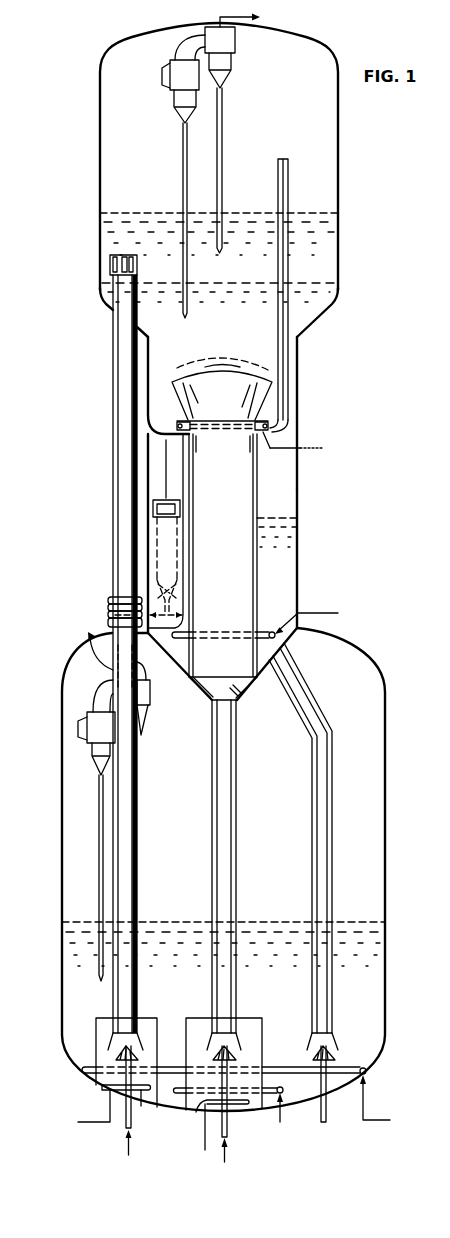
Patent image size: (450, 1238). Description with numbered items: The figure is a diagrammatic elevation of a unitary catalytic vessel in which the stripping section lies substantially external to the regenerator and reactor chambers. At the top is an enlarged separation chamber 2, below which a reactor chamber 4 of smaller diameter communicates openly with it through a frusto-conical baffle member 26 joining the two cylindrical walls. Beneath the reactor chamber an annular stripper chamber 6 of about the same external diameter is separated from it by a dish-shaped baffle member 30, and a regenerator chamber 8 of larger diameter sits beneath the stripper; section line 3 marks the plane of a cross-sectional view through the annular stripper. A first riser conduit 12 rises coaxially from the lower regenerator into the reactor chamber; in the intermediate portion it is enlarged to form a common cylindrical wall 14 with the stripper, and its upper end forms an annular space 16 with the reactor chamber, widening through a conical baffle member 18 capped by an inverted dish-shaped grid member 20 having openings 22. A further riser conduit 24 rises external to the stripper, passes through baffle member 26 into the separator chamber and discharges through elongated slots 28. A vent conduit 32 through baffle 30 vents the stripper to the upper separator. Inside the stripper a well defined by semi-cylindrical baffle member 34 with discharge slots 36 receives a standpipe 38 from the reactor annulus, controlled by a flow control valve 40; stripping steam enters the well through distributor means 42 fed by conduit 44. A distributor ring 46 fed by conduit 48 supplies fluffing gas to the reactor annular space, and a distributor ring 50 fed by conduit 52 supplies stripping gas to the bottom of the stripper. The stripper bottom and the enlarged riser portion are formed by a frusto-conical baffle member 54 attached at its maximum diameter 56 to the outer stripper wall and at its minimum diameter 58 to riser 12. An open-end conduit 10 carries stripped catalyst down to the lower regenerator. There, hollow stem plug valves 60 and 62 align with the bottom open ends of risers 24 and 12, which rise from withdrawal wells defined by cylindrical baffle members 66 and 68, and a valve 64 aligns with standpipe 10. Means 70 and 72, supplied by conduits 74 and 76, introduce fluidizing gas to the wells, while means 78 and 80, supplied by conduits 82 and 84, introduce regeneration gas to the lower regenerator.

The separation chamber 2 is at (100, 172).
The section line 3- 3 is at (122, 490).
The reactor chamber 4 is at (298, 367).
The stripping section 6 is at (298, 548).
The regenerator chamber 8 is at (385, 843).
The open end conduit 10 is at (333, 828).
The first riser conduit 12 is at (237, 827).
The common cylindrical wall 14 is at (256, 500).
The annular space 16 is at (153, 401).
The conical baffle member 18 is at (211, 401).
The perforated baffle or grid member 20 is at (199, 364).
The openings 22 is at (250, 368).
The riser conduit 24 is at (112, 407).
The frusto conical baffle member 26 is at (323, 311).
The elongated slots or openings 28 is at (126, 256).
The dish-shaped baffle member 30 is at (272, 431).
The vent conduit 32 is at (278, 180).
The semi-cylindrical baffle member 34 is at (178, 548).
The discharge slots 36 is at (181, 508).
The standpipe 38 is at (176, 468).
The flow control valve 40 is at (176, 593).
The distributor means 42 is at (183, 612).
The conduit 44 is at (108, 616).
The distributor ring 46 is at (265, 446).
The conduit 48 is at (322, 448).
The distributor ring 50 is at (268, 630).
The conduit 52 is at (318, 613).
The frusto conical baffle member 54 is at (181, 670).
The upper periphery or maximum diameter 56 is at (298, 641).
The lower periphery or minimum diameter 58 is at (238, 701).
The hollow stem plug valve 60 is at (124, 1118).
The hollow stem plug valve 62 is at (228, 1118).
The vertically movable valve 64 is at (327, 1102).
The cylindrical baffle member 66 is at (96, 1024).
The cylindrical baffle member 68 is at (262, 1034).
The fluidizing gas means 70 is at (141, 1106).
The fluidizing gas means 72 is at (195, 1113).
The conduit 74 is at (106, 1102).
The conduit 76 is at (202, 1130).
The regeneration gas means 78 is at (284, 1089).
The regeneration gas means 80 is at (347, 1066).
The conduit 82 is at (283, 1114).
The conduit 84 is at (368, 1113).